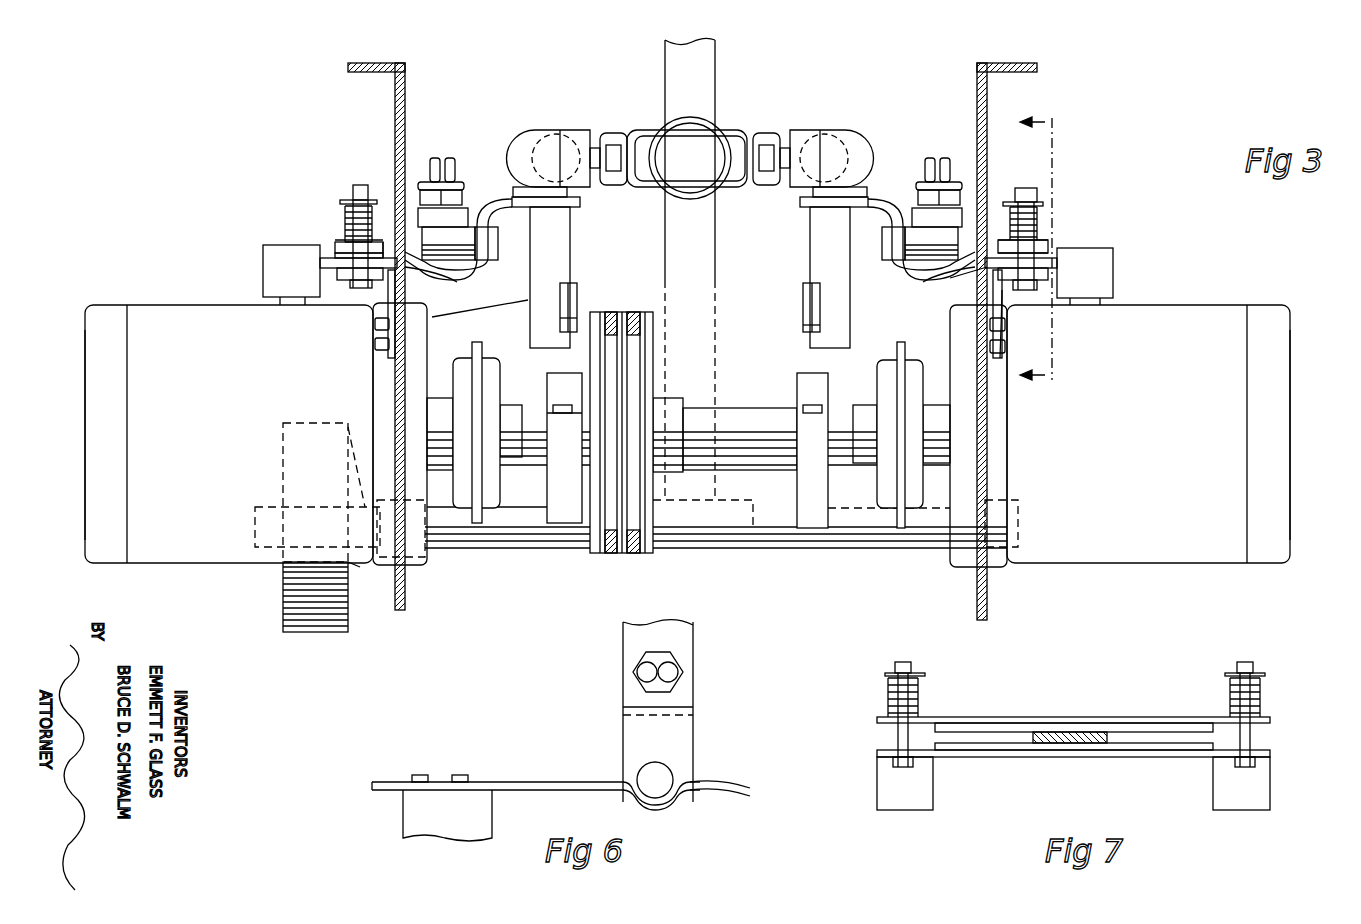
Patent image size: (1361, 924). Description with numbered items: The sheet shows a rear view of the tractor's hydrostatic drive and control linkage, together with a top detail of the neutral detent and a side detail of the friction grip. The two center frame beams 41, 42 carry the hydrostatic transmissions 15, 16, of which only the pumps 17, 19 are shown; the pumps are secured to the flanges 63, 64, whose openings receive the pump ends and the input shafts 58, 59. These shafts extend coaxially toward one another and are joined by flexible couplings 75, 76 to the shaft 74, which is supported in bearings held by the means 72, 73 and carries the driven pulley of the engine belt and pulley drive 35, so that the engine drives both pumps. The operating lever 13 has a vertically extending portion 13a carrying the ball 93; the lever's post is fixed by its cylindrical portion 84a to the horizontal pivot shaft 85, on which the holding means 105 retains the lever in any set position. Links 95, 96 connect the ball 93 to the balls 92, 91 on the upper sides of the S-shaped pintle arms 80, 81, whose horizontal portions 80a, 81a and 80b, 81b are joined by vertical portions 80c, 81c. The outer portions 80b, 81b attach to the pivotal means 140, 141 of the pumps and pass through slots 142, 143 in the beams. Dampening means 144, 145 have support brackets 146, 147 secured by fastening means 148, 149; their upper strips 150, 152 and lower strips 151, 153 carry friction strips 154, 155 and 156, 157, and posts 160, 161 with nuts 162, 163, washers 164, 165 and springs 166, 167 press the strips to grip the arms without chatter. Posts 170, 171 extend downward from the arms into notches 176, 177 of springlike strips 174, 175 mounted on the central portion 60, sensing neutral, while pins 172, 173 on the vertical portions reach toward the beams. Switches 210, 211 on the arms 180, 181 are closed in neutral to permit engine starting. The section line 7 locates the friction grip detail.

In FIG. 3, the section line 7- 7 is at (1049, 250).
In FIG. 3, the operating lever 13 is at (733, 50).
In FIG. 3, the vertically extending portion 13a is at (665, 56).
In FIG. 3, the hydrostatic transmission 15 is at (190, 295).
In FIG. 3, the hydrostatic transmission 16 is at (1225, 290).
In FIG. 3, the hydraulic pump 17 is at (165, 550).
In FIG. 3, the hydraulic pump 19 is at (1212, 565).
In FIG. 3, the belt and pulley drive 35 is at (600, 558).
In FIG. 3, the center frame beam 41 is at (407, 92).
In FIG. 3, the center frame beam 42 is at (977, 92).
In FIG. 3, the input shaft 58 is at (445, 400).
In FIG. 3, the input shaft 59 is at (940, 418).
In FIG. 6, the central portion 60 is at (415, 815).
In FIG. 3, the flange 63 is at (425, 555).
In FIG. 3, the flange 64 is at (968, 555).
In FIG. 3, the bearing holding means 72 is at (577, 373).
In FIG. 3, the bearing holding means 73 is at (800, 375).
In FIG. 3, the shaft 74 is at (703, 413).
In FIG. 3, the flexible coupling 75 is at (483, 378).
In FIG. 3, the flexible coupling 76 is at (885, 365).
In FIG. 3, the pintle arm 80 is at (497, 190).
In FIG. 6, the pintle arm 80 is at (693, 650).
In FIG. 3, the inner horizontal portion 80a is at (567, 205).
In FIG. 3, the outer horizontal portion 80b is at (330, 300).
In FIG. 7, the outer horizontal portion 80b is at (1080, 745).
In FIG. 3, the vertical intermediate portion 80c is at (473, 283).
In FIG. 3, the pintle arm 81 is at (872, 192).
In FIG. 3, the inner horizontal portion 81a is at (815, 207).
In FIG. 3, the outer horizontal portion 81b is at (1003, 283).
In FIG. 3, the vertical intermediate portion 81c is at (905, 283).
In FIG. 3, the cylindrical portion 84a is at (705, 555).
In FIG. 3, the horizontal pivot shaft 85 is at (810, 553).
In FIG. 3, the ball 91 is at (858, 140).
In FIG. 3, the ball 92 is at (520, 140).
In FIG. 3, the ball 93 is at (712, 142).
In FIG. 3, the link 95 is at (608, 130).
In FIG. 3, the link 96 is at (765, 130).
In FIG. 3, the holding means 105 is at (268, 598).
In FIG. 3, the pivotal means 140 is at (275, 265).
In FIG. 3, the pivotal means 141 is at (1090, 275).
In FIG. 3, the slot 142 is at (436, 318).
In FIG. 3, the slot 143 is at (990, 282).
In FIG. 3, the dampening means 144 is at (336, 224).
In FIG. 3, the dampening means 145 is at (1055, 223).
In FIG. 3, the support bracket 146 is at (382, 328).
In FIG. 3, the support bracket 147 is at (990, 320).
In FIG. 7, the support bracket 147 is at (890, 783).
In FIG. 3, the fastening means 148 is at (380, 348).
In FIG. 3, the fastening means 149 is at (998, 355).
In FIG. 3, the upper strip 150 is at (340, 242).
In FIG. 3, the lower strip 151 is at (372, 300).
In FIG. 3, the upper strip 152 is at (1050, 252).
In FIG. 7, the upper strip 152 is at (1085, 717).
In FIG. 3, the lower strip 153 is at (1040, 288).
In FIG. 7, the lower strip 153 is at (1108, 757).
In FIG. 3, the friction strip 154 is at (337, 255).
In FIG. 3, the friction strip 155 is at (378, 315).
In FIG. 3, the friction strip 156 is at (998, 245).
In FIG. 7, the friction strip 156 is at (1000, 728).
In FIG. 3, the friction strip 157 is at (1042, 300).
In FIG. 7, the friction strip 157 is at (1003, 745).
In FIG. 3, the post 160 is at (360, 185).
In FIG. 3, the post 161 is at (1030, 190).
In FIG. 7, the post 161 is at (1248, 663).
In FIG. 3, the nut 162 is at (345, 205).
In FIG. 3, the nut 163 is at (1040, 204).
In FIG. 7, the nut 163 is at (1262, 675).
In FIG. 3, the washer 164 is at (345, 222).
In FIG. 3, the washer 165 is at (1047, 208).
In FIG. 7, the washer 165 is at (1230, 677).
In FIG. 3, the spring 166 is at (385, 240).
In FIG. 3, the spring 167 is at (1048, 232).
In FIG. 7, the spring 167 is at (888, 692).
In FIG. 3, the post 170 is at (570, 258).
In FIG. 6, the post 170 is at (672, 778).
In FIG. 3, the post 171 is at (820, 262).
In FIG. 3, the pin 172 is at (458, 234).
In FIG. 3, the pin 173 is at (922, 234).
In FIG. 3, the springlike strip 174 is at (578, 302).
In FIG. 6, the springlike strip 174 is at (523, 782).
In FIG. 3, the springlike strip 175 is at (803, 297).
In FIG. 3, the notch 176 is at (565, 320).
In FIG. 6, the notch 176 is at (680, 795).
In FIG. 3, the notch 177 is at (803, 325).
In FIG. 3, the arm 180 is at (428, 182).
In FIG. 3, the arm 181 is at (955, 210).
In FIG. 3, the switch 210 is at (448, 160).
In FIG. 6, the switch 210 is at (640, 670).
In FIG. 3, the switch 211 is at (925, 160).